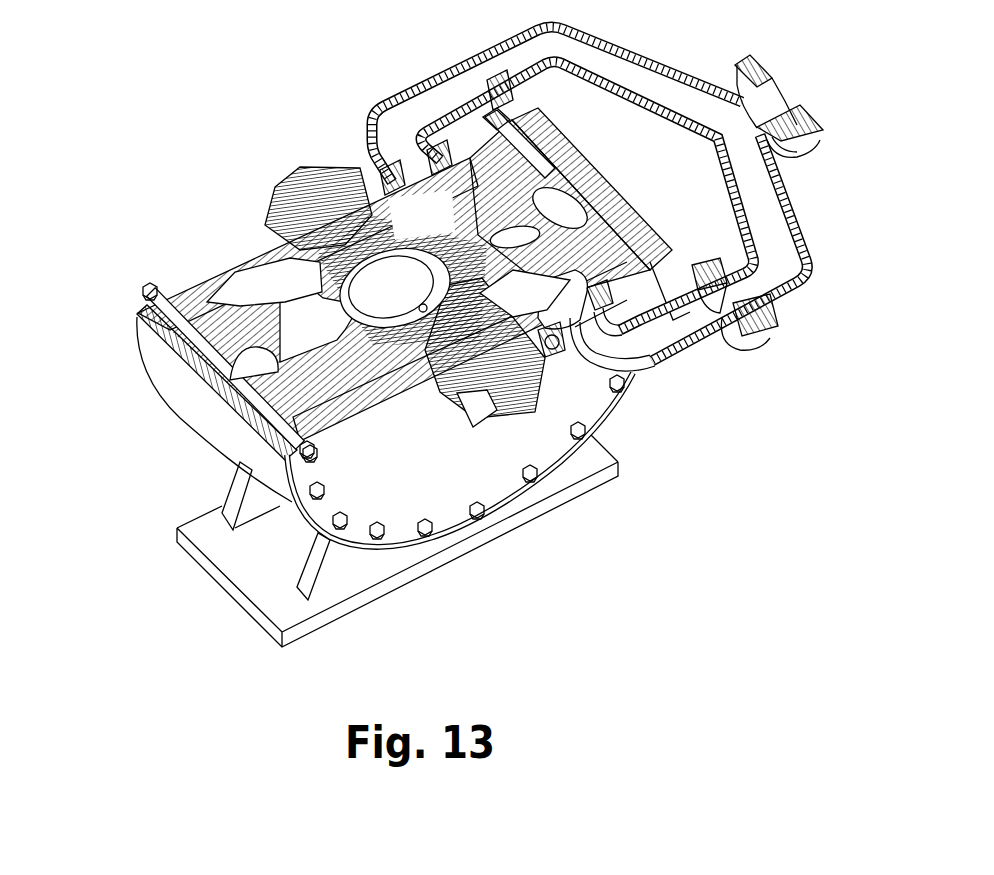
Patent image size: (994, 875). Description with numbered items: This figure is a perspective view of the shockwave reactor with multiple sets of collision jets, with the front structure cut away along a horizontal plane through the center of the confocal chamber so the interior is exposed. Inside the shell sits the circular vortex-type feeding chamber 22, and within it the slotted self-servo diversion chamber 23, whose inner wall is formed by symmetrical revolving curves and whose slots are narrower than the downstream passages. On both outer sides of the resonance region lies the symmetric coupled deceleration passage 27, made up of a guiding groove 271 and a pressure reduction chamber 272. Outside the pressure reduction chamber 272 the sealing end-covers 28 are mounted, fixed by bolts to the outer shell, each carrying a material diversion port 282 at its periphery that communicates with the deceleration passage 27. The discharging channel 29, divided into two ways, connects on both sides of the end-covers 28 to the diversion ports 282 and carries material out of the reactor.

The vortex-type feeding chamber 22 is at (248, 358).
The slotted self-servo diversion chamber 23 is at (273, 350).
The symmetric coupled deceleration passage 27 is at (425, 308).
The guiding groove 271 is at (237, 260).
The pressure reduction chamber 272 is at (270, 217).
The sealing end-cover 28 is at (413, 377).
The material diversion port 282 is at (567, 313).
The discharging channel 29 is at (740, 143).